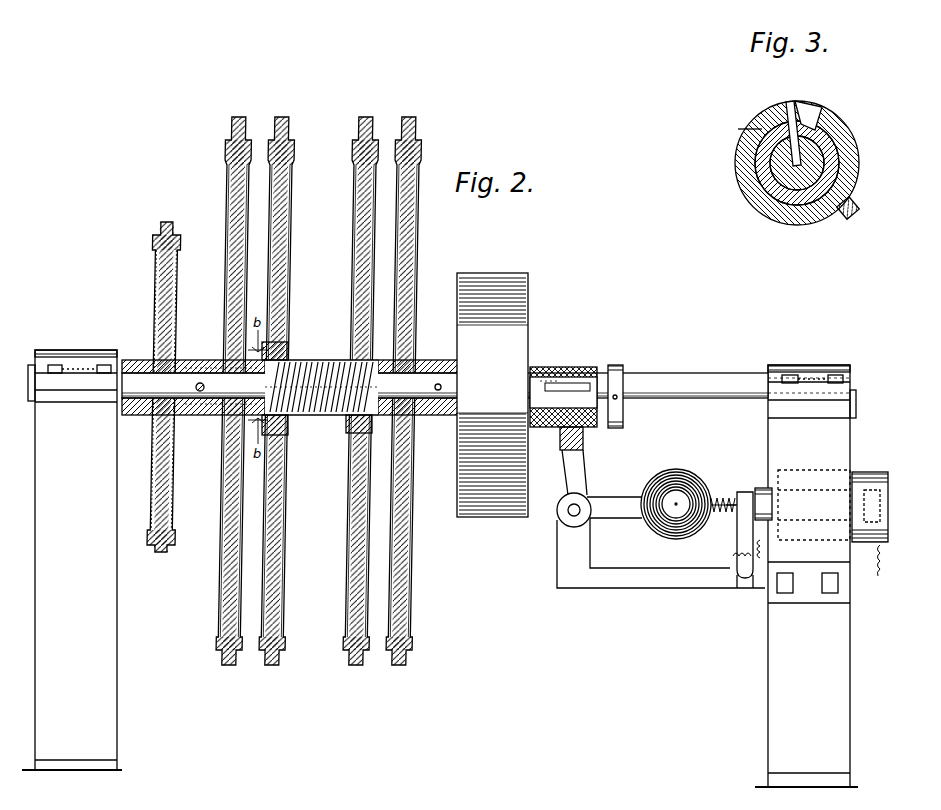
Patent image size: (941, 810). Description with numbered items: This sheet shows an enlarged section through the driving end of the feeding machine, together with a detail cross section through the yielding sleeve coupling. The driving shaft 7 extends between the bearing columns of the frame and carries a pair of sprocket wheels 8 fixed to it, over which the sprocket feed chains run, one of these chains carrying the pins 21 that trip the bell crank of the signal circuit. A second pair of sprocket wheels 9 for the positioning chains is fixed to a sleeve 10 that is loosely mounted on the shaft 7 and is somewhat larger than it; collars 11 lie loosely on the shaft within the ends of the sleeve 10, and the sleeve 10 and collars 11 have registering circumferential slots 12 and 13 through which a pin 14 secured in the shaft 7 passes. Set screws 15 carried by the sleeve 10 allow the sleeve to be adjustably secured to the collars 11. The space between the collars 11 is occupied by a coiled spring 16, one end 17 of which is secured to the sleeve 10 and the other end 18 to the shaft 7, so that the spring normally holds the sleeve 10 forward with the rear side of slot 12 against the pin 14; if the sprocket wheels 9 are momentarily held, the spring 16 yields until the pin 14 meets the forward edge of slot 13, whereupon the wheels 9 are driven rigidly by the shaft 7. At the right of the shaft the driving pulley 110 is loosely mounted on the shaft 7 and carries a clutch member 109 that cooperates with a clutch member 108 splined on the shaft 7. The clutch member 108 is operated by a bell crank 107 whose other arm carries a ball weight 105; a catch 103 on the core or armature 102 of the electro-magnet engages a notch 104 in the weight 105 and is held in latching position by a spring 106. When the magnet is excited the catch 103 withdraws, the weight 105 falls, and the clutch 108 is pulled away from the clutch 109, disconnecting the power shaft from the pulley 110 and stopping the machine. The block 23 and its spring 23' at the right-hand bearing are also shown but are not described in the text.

In FIG. 2, the driving shaft 7 is at (678, 396).
In FIG. 3, the driving shaft 7 is at (752, 178).
In FIG. 2, the sprocket wheels 8 is at (228, 172).
In FIG. 2, the sprocket wheels 9 is at (357, 235).
In FIG. 2, the sleeve 10 is at (302, 368).
In FIG. 3, the sleeve 10 is at (842, 118).
In FIG. 2, the collars 11 is at (226, 418).
In FIG. 3, the collars 11 is at (838, 155).
In FIG. 3, the circumferential slot 12 is at (808, 112).
In FIG. 3, the circumferential slot 13 is at (740, 127).
In FIG. 2, the pin 14 is at (228, 360).
In FIG. 3, the pin 14 is at (791, 101).
In FIG. 3, the set screws 15 is at (858, 207).
In FIG. 2, the coiled spring 16 is at (330, 420).
In FIG. 2, the spring end 17 is at (353, 420).
In FIG. 2, the spring end 18 is at (291, 357).
In FIG. 2, the pins 21 is at (758, 540).
In FIG. 2, the bearing block 23 is at (883, 507).
In FIG. 2, the spring 23' is at (897, 563).
In FIG. 2, the core or armature 102 is at (763, 488).
In FIG. 2, the catch 103 is at (720, 497).
In FIG. 2, the notch 104 is at (712, 498).
In FIG. 2, the ball weight 105 is at (665, 492).
In FIG. 2, the spring 106 is at (724, 514).
In FIG. 2, the bell crank 107 is at (582, 480).
In FIG. 2, the clutch member 108 is at (592, 372).
In FIG. 2, the clutch member 109 is at (536, 372).
In FIG. 2, the driving pulley 110 is at (492, 395).